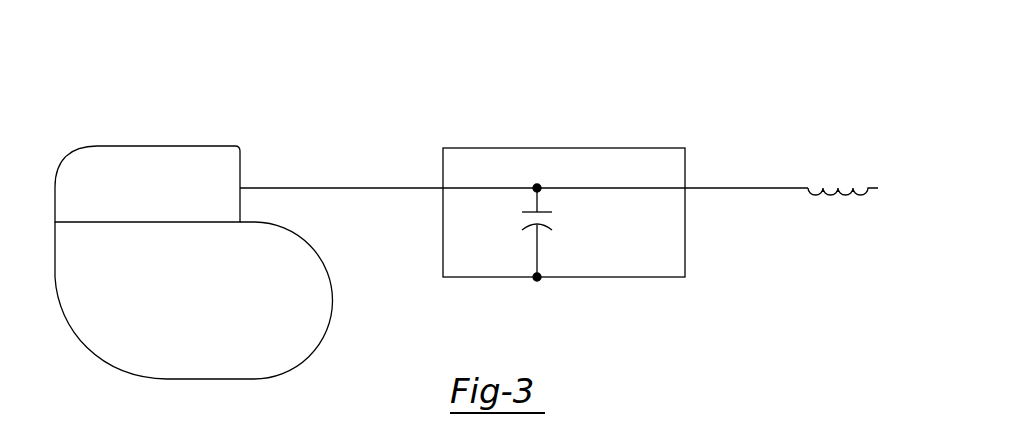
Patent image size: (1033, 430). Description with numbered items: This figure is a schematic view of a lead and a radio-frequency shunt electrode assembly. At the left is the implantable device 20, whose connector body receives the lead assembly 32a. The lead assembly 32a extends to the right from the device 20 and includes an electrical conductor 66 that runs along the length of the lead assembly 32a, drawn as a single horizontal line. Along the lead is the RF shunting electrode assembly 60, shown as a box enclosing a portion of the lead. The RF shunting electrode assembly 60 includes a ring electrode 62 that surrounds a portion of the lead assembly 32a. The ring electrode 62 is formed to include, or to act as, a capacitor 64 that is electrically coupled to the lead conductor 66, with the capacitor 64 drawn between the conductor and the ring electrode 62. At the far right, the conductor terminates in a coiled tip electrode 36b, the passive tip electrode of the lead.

The implantable pulse generator 20 is at (117, 118).
The first lead assembly 32a is at (308, 176).
The electrical conductor 66 is at (371, 188).
The RF shunting electrode assembly 60 is at (597, 205).
The ring electrode 62 is at (590, 148).
The capacitor 64 is at (522, 222).
The passive tip electrode 36b is at (828, 199).